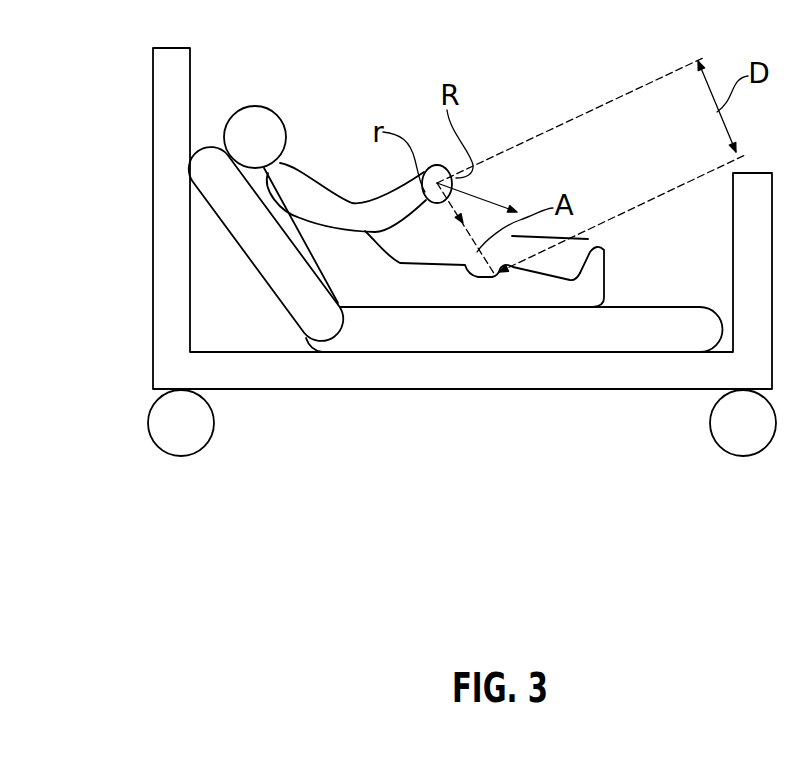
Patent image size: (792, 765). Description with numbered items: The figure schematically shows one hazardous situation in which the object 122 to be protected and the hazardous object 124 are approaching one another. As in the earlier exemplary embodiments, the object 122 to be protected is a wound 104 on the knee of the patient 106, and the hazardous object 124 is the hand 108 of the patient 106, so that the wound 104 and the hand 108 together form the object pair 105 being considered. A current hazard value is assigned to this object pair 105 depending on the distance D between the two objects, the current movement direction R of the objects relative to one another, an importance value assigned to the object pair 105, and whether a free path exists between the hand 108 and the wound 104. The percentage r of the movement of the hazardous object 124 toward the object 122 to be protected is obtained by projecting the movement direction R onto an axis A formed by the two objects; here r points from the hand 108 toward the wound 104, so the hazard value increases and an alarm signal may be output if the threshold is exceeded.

The wound 104 is at (588, 239).
The object pair 105 is at (469, 411).
The patient 106 is at (318, 232).
The hand 108 is at (437, 171).
The object to be protected 122 is at (498, 288).
The hazardous object 124 is at (443, 216).